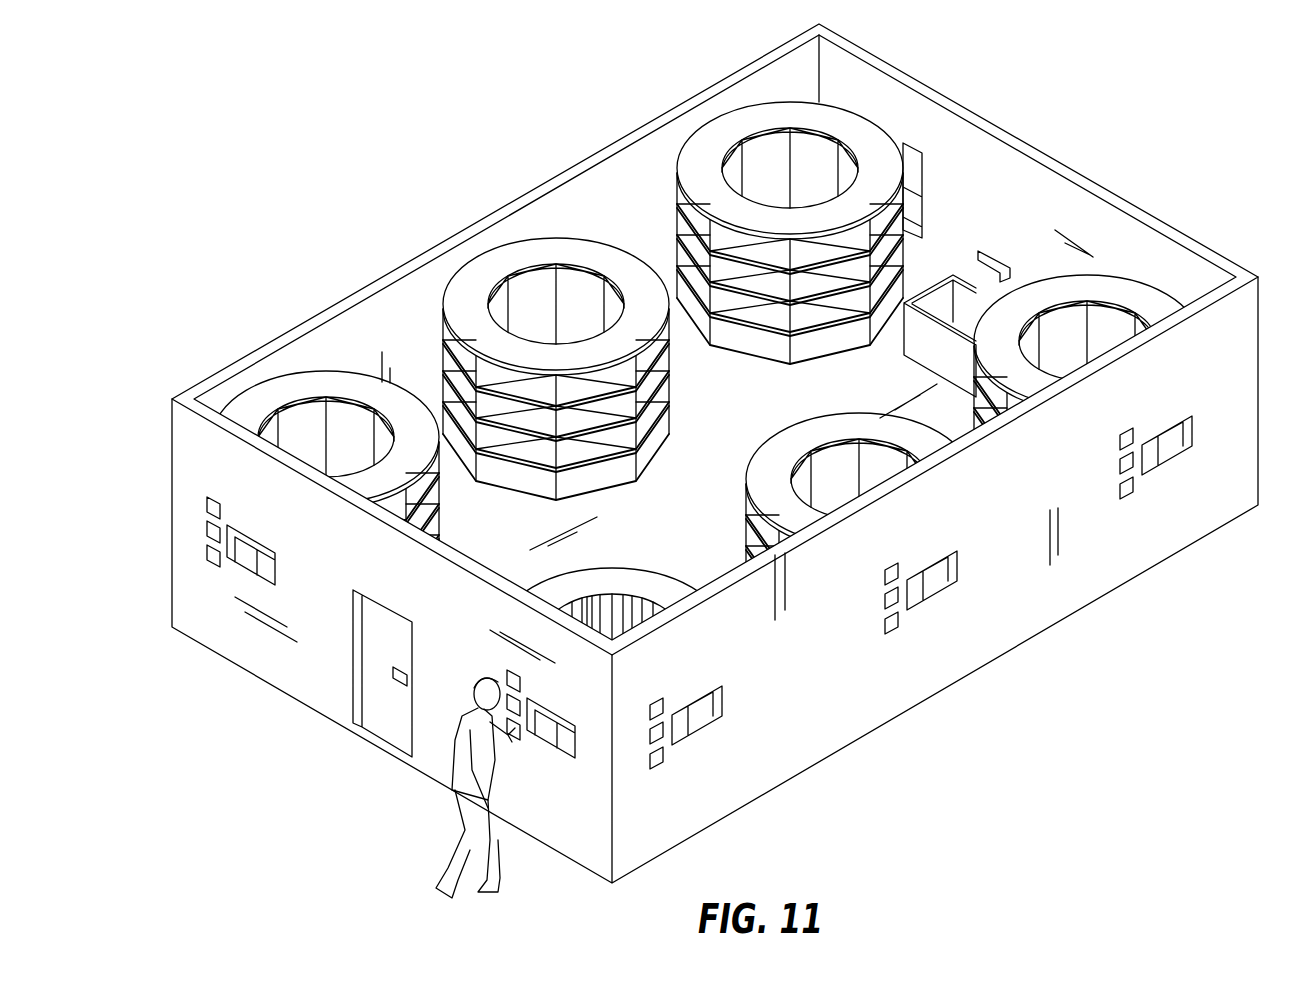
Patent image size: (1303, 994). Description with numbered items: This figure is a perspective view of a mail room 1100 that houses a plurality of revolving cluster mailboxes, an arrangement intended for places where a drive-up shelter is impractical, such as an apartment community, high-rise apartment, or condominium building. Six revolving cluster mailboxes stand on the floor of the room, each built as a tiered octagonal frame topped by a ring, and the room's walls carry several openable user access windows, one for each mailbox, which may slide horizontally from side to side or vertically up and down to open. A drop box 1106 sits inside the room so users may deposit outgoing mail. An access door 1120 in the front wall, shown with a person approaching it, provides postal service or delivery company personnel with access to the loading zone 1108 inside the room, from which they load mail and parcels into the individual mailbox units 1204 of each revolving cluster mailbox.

The mail room 1100 is at (176, 296).
The drop box 1106 is at (940, 293).
The loading zone 1108 is at (733, 404).
The access door 1120 is at (388, 720).
The individual mailbox unit 1204 is at (748, 521).